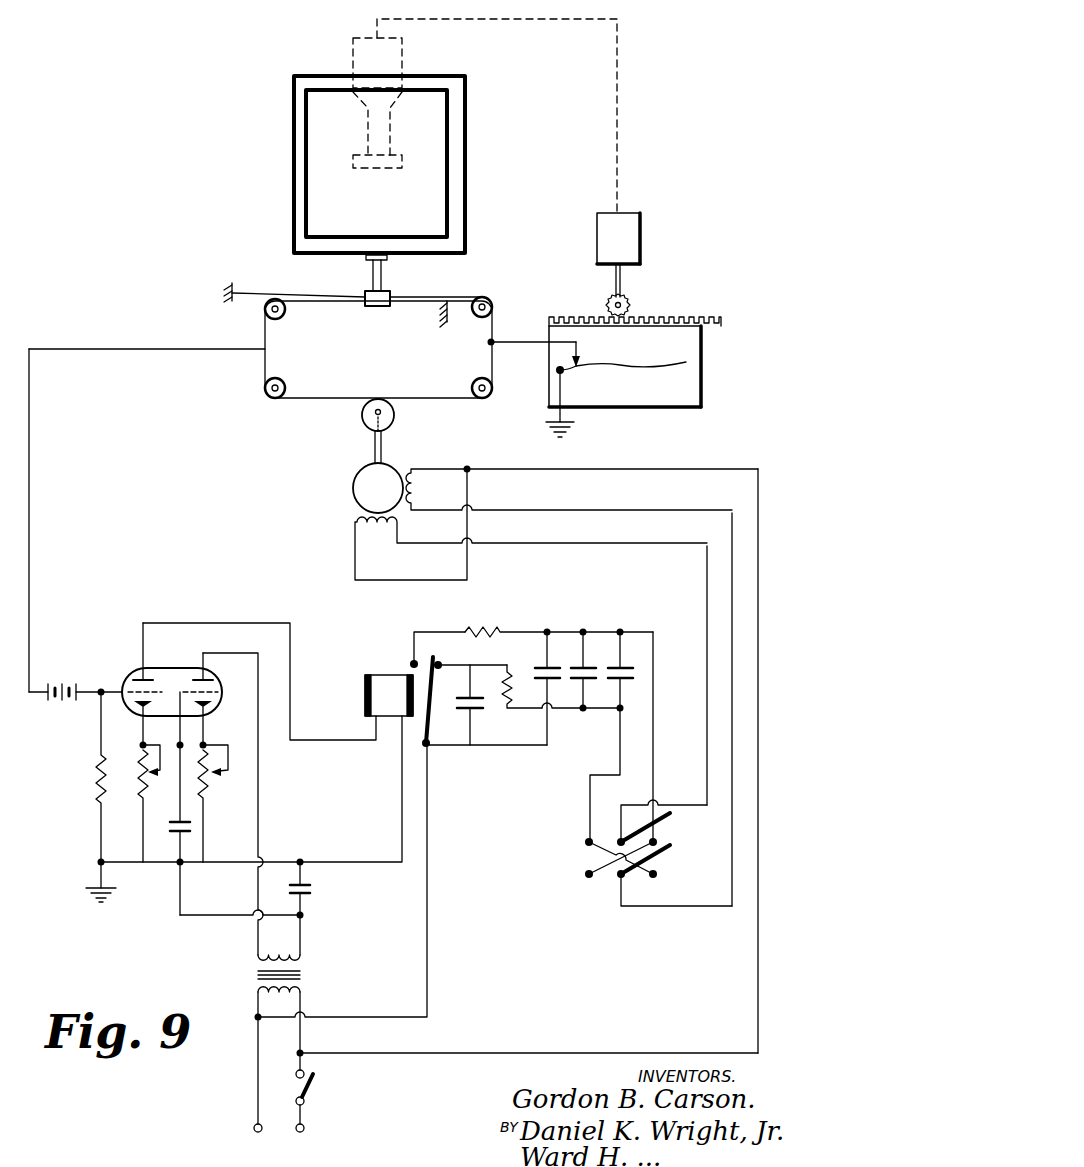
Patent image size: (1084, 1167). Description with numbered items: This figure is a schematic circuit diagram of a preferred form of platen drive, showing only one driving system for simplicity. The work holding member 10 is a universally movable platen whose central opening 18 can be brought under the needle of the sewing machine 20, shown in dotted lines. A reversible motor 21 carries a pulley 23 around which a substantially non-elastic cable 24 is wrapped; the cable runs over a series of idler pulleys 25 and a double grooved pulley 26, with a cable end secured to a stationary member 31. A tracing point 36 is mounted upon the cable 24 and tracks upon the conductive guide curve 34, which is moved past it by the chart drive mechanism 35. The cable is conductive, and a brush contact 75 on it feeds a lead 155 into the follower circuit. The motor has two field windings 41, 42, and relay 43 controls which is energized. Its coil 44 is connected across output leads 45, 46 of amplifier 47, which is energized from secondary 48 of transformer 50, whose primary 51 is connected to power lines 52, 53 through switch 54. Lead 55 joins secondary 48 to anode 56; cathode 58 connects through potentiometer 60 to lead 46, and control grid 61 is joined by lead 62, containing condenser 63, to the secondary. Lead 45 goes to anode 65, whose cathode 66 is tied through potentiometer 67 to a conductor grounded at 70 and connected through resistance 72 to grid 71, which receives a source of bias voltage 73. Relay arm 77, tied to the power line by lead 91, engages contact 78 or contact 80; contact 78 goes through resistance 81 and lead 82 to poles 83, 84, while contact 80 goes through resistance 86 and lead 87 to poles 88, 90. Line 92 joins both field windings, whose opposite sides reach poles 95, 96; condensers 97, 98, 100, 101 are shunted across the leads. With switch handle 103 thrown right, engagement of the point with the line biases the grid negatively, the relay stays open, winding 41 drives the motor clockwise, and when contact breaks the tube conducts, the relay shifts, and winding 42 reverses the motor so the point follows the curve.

The work holding member 10 is at (290, 121).
The central opening 18 is at (333, 202).
The sewing machine 20 is at (404, 50).
The reversible motor 21 is at (396, 472).
The pulley 23 is at (365, 414).
The cable 24 is at (338, 398).
The idler pulleys 25 is at (285, 314).
The double grooved pulley 26 is at (379, 306).
The stationary member 31 is at (447, 322).
The guide curve 34 is at (631, 364).
The chart drive mechanism 35 is at (622, 283).
The tracing point 36 is at (578, 352).
The field winding 41 is at (413, 489).
The field winding 42 is at (379, 530).
The relay 43 is at (381, 668).
The relay coil 44 is at (364, 698).
The output lead 45 is at (350, 742).
The output lead 46 is at (398, 828).
The amplifier 47 is at (170, 664).
The secondary 48 is at (302, 960).
The transformer 50 is at (302, 975).
The primary 51 is at (302, 990).
The power line 52 is at (254, 1106).
The power line 53 is at (304, 1118).
The switch 54 is at (312, 1088).
The lead 55 is at (228, 654).
The anode 56 is at (212, 676).
The cathode 58 is at (214, 706).
The potentiometer 60 is at (213, 742).
The control grid 61 is at (184, 692).
The lead 62 is at (200, 913).
The condenser 63 is at (176, 834).
The anode 65 is at (141, 678).
The cathode 66 is at (150, 708).
The potentiometer 67 is at (163, 772).
The ground 70 is at (95, 889).
The grid 71 is at (122, 688).
The resistance 72 is at (98, 772).
The source of bias voltage 73 is at (58, 688).
The brush contact 75 is at (264, 348).
The relay arm 77 is at (431, 700).
The contact 78 is at (411, 658).
The contact 80 is at (446, 662).
The resistance 81 is at (496, 628).
The lead 82 is at (606, 630).
The pole 83 is at (650, 838).
The pole 84 is at (586, 876).
The resistance 86 is at (512, 680).
The lead 87 is at (568, 712).
The pole 88 is at (584, 838).
The pole 90 is at (658, 874).
The lead 91 is at (430, 903).
The line 92 is at (524, 1052).
The pole 95 is at (619, 880).
The pole 96 is at (619, 839).
The condenser 97 is at (478, 712).
The condenser 98 is at (550, 666).
The condenser 100 is at (586, 666).
The condenser 101 is at (624, 666).
The switch handle 103 is at (690, 812).
The lead 155 is at (30, 487).